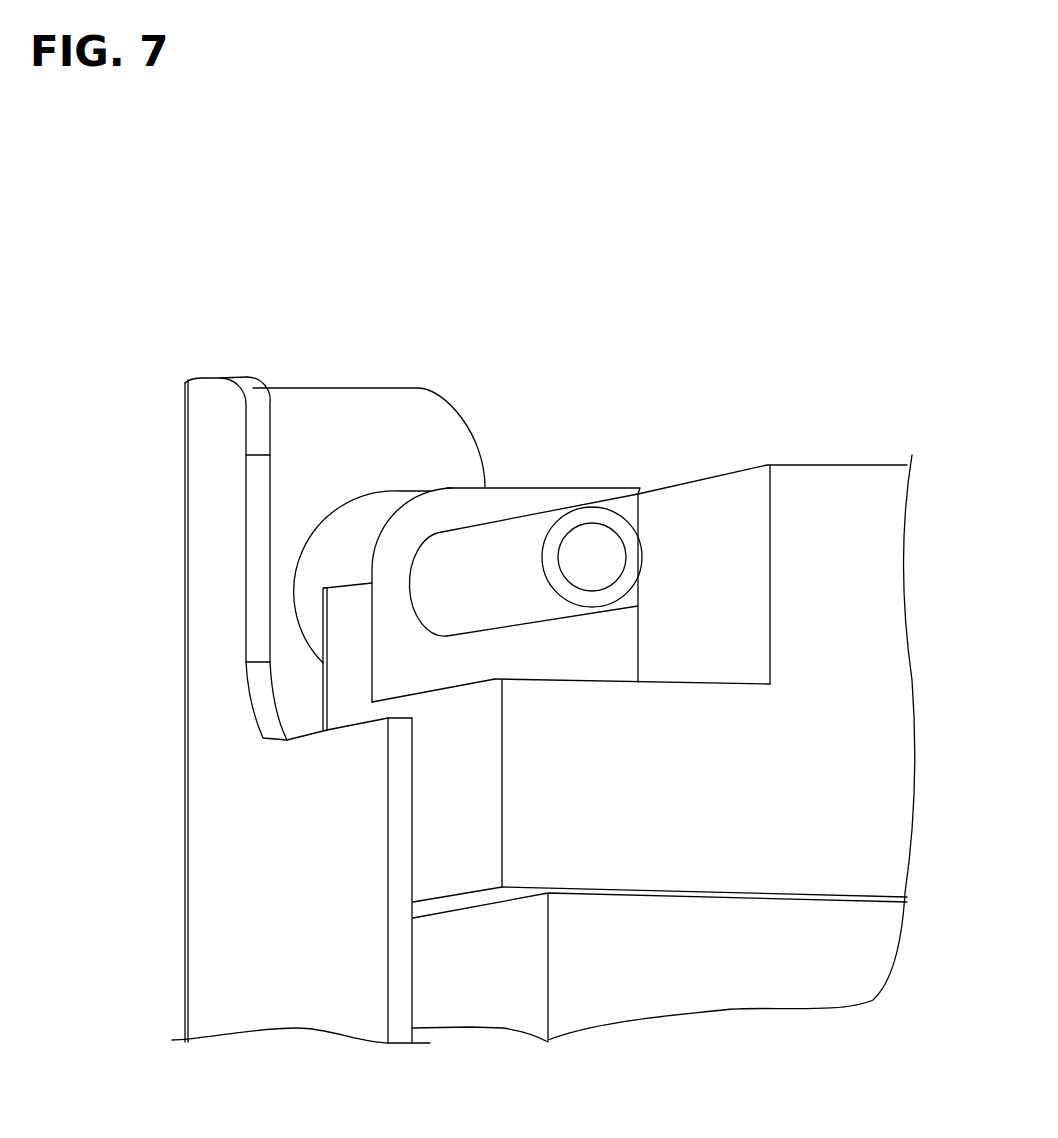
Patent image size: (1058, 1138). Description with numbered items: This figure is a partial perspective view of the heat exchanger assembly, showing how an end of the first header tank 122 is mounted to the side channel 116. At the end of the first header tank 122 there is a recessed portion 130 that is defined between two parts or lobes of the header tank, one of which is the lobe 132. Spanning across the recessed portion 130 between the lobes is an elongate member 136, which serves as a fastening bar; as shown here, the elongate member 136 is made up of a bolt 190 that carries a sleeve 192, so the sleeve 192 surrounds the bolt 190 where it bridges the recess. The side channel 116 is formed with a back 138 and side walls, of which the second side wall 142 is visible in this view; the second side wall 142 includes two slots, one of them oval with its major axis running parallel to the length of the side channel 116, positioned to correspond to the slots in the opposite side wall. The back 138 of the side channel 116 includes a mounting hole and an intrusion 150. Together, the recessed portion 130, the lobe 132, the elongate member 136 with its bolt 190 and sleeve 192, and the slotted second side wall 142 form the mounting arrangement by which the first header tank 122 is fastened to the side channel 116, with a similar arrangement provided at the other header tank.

The side channel 116 is at (213, 972).
The first header tank 122 is at (853, 497).
The recessed portion 130 is at (687, 518).
The lobe 132 is at (478, 508).
The elongate member 136 is at (507, 520).
The back 138 is at (223, 908).
The second side wall 142 is at (322, 387).
The intrusion 150 is at (290, 700).
The bolt 190 is at (567, 560).
The sleeve 192 is at (503, 592).